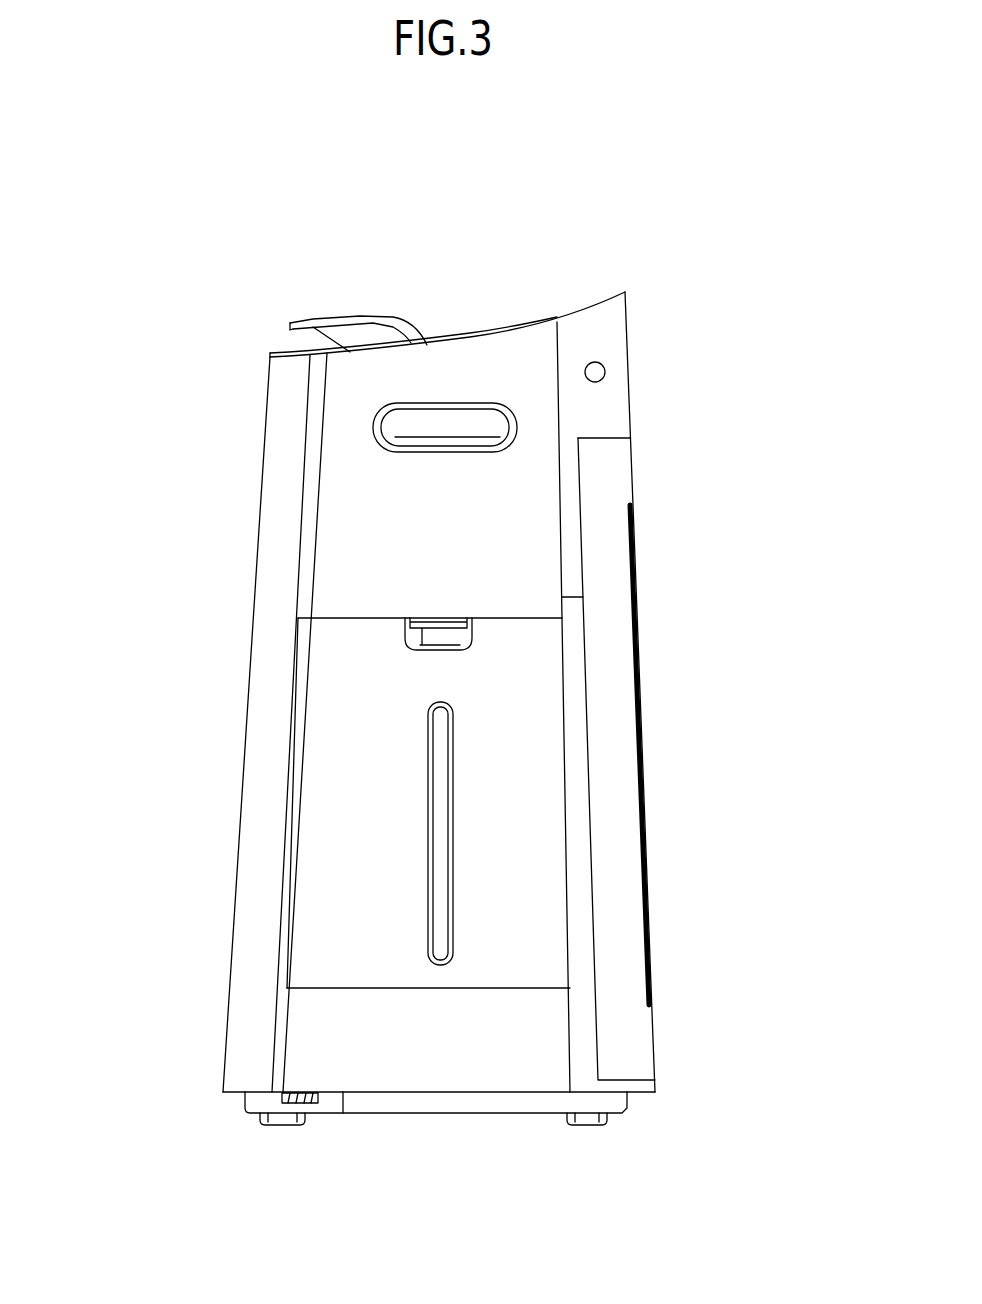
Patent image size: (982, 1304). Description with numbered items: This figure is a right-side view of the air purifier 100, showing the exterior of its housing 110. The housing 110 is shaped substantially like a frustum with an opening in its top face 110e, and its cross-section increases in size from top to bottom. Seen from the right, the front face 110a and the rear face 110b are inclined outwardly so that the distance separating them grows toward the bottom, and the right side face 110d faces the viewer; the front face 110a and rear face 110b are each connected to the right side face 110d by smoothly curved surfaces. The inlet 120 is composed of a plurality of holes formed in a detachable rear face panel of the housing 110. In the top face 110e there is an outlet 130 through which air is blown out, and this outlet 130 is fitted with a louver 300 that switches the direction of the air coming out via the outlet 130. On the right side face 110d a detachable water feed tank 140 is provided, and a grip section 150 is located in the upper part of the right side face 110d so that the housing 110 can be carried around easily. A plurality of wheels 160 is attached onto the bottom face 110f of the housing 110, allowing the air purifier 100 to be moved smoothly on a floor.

The air purifier 100 is at (652, 238).
The housing 110 is at (258, 383).
The front face 110a is at (252, 592).
The rear face 110b is at (630, 420).
The right side face 110d is at (387, 1077).
The top face 110e is at (447, 324).
The bottom face 110f is at (510, 1115).
The inlet 120 is at (652, 659).
The outlet 130 is at (512, 330).
The water feed tank 140 is at (315, 773).
The grip section 150 is at (392, 436).
The wheels 160 is at (290, 1125).
The louver 300 is at (317, 316).